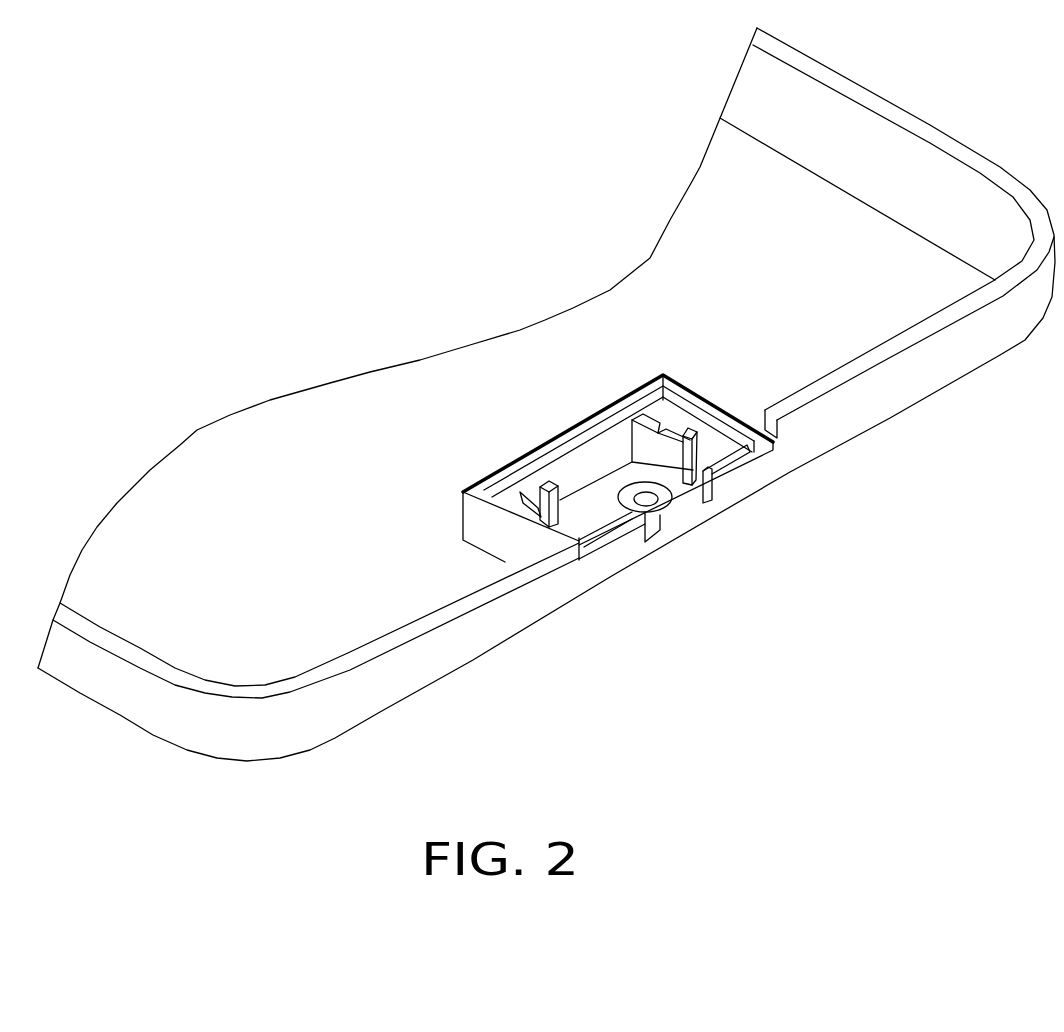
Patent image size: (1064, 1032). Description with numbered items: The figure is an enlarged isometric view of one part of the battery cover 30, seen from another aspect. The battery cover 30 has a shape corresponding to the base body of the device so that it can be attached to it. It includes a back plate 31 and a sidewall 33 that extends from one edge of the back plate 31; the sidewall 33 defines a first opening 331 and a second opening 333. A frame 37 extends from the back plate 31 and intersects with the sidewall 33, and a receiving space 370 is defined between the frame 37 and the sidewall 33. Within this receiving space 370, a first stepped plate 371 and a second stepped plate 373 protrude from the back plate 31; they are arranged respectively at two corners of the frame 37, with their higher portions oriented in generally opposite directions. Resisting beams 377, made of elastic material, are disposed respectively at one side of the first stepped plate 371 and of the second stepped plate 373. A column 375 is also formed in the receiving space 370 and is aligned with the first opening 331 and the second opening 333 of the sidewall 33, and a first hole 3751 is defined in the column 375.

The battery cover 30 is at (546, 394).
The back plate 31 is at (230, 458).
The sidewall 33 is at (445, 648).
The first opening 331 is at (780, 437).
The second opening 333 is at (700, 502).
The frame 37 is at (587, 397).
The receiving space 370 is at (587, 500).
The first stepped plate 371 is at (651, 413).
The second stepped plate 373 is at (520, 495).
The column 375 is at (647, 498).
The first hole 3751 is at (645, 500).
The resisting beams 377 is at (548, 482).